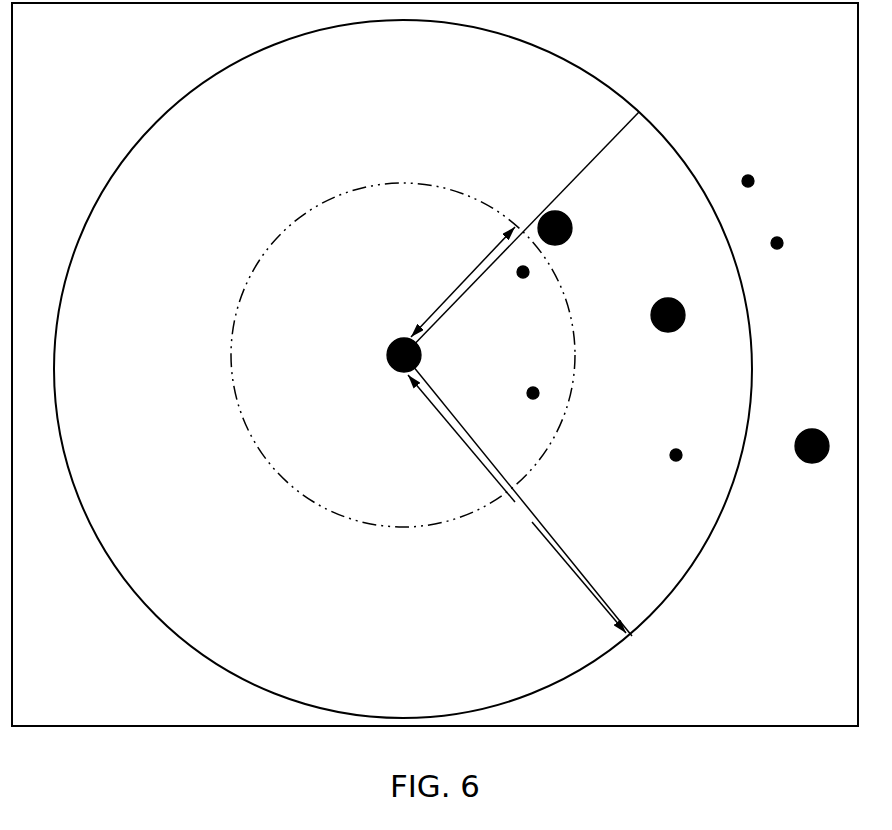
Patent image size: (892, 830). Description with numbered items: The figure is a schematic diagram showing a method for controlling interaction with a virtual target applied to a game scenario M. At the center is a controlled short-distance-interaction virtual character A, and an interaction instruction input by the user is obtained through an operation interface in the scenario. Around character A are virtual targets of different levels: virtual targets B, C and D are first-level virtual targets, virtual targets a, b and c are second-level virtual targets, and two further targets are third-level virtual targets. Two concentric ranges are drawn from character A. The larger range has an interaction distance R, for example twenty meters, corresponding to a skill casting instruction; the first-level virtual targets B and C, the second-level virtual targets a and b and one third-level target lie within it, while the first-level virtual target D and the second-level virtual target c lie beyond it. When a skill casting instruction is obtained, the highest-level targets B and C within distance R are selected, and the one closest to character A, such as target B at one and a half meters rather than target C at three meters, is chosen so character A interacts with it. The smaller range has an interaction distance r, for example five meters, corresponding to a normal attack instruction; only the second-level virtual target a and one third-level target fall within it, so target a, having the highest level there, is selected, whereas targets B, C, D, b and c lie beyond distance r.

The game scenario M is at (435, 364).
The short-distance-interaction virtual character A is at (388, 355).
The first-level virtual target B is at (570, 228).
The first-level virtual target C is at (685, 308).
The first-level virtual target D is at (813, 461).
The second-level virtual target a is at (532, 404).
The second-level virtual target b is at (684, 448).
The second-level virtual target c is at (756, 174).
The interaction distance r is at (435, 319).
The interaction distance R is at (518, 495).